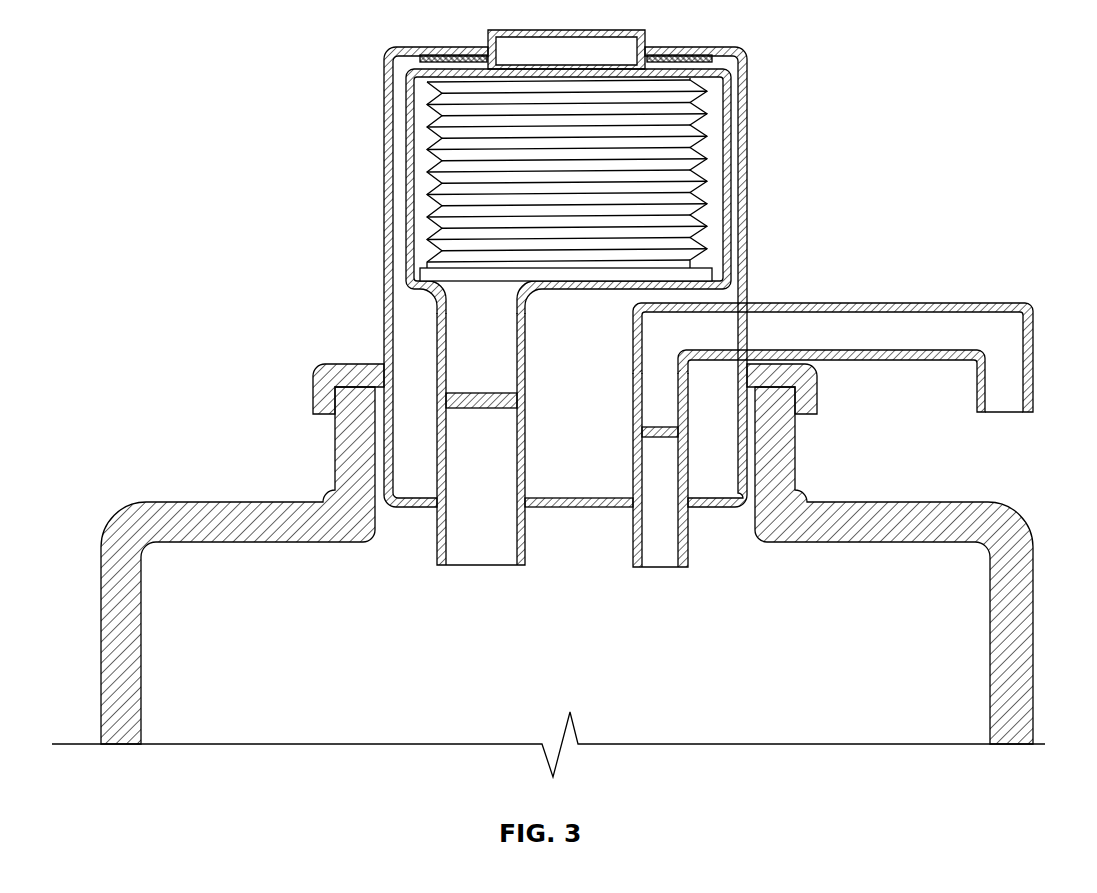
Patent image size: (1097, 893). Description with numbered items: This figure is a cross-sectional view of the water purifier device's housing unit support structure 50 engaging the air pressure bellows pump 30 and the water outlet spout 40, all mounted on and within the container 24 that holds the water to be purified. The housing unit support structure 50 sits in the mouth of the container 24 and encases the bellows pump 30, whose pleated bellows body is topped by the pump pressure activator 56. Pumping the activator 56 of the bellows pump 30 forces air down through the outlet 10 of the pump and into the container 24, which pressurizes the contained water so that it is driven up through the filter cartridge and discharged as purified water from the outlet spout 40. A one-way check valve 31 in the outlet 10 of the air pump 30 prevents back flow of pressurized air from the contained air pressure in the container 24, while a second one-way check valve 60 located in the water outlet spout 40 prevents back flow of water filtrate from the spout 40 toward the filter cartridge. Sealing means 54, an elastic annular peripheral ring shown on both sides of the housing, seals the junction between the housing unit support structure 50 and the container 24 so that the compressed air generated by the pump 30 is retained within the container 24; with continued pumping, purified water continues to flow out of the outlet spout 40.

The outlet 10 is at (481, 438).
The container 24 is at (240, 545).
The air pressure bellows pump 30 is at (726, 128).
The one-way check valve 31 is at (470, 393).
The water outlet spout 40 is at (880, 302).
The housing unit support structure 50 is at (748, 189).
The sealing means 54 is at (313, 401).
The pump pressure activator 56 is at (565, 31).
The one-way check valve 60 is at (653, 426).